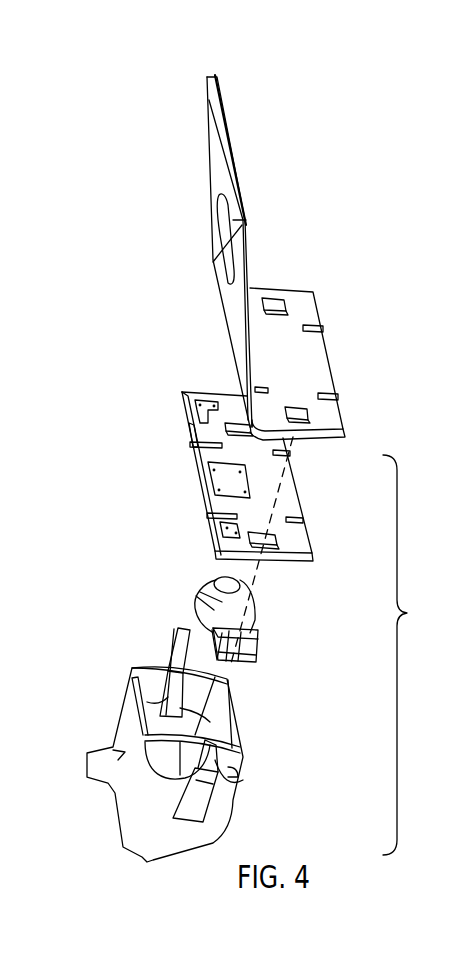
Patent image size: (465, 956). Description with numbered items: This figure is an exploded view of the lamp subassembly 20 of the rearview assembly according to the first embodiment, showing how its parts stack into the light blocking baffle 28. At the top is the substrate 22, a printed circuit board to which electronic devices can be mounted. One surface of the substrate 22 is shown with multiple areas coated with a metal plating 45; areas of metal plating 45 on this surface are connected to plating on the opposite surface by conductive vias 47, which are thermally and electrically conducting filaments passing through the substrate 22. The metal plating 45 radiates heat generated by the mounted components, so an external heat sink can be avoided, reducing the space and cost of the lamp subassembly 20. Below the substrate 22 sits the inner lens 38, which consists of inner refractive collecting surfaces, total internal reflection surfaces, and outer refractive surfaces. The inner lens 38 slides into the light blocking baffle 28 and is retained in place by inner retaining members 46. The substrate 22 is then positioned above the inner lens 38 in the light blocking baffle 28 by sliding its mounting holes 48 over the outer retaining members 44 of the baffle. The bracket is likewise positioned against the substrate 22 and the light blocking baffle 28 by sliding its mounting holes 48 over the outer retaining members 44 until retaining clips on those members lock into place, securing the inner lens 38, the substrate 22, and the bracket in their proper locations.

The lamp subassembly 20 is at (255, 658).
The substrate 22 is at (172, 338).
The light blocking baffle 28 is at (127, 812).
The inner lens 38 is at (217, 592).
The outer retaining members 44 is at (170, 648).
The metal plating 45 is at (195, 454).
The inner retaining members 46 is at (168, 697).
The conductive vias 47 is at (200, 406).
The mounting holes 48 is at (270, 300).